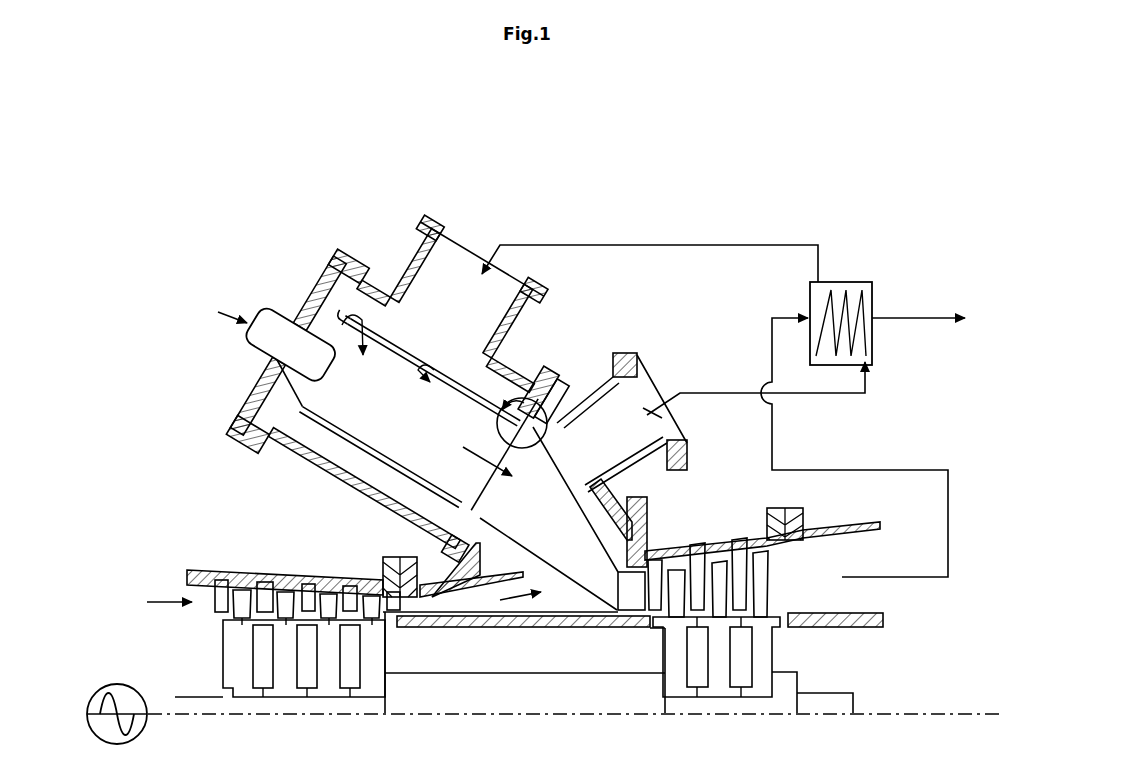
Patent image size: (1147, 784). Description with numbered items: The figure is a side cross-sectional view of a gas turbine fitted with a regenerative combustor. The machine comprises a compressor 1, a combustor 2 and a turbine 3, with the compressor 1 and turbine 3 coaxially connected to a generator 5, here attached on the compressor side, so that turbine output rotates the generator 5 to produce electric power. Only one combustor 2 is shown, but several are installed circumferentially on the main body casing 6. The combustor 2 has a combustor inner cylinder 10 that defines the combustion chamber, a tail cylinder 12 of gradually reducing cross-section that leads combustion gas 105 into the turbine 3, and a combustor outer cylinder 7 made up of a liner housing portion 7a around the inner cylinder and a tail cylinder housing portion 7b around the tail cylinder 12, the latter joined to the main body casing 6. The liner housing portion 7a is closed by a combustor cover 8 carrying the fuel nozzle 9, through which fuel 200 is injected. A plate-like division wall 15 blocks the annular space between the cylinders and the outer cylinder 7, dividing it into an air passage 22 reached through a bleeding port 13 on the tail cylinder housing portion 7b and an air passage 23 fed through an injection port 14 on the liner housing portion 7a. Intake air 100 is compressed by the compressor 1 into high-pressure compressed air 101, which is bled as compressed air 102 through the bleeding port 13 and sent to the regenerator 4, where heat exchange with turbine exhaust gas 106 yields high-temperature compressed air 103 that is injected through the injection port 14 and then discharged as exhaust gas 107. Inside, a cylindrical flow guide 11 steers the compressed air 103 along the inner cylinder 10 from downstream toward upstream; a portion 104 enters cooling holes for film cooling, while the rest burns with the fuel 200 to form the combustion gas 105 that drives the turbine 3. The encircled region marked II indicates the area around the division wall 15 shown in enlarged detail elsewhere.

The compressor 1 is at (253, 566).
The combustor 2 is at (417, 374).
The turbine 3 is at (696, 540).
The regenerator 4 is at (858, 282).
The generator 5 is at (106, 688).
The main body casing 6 is at (341, 579).
The combustor outer cylinder 7 is at (544, 395).
The liner housing portion 7a is at (538, 392).
The tail cylinder housing portion 7b is at (552, 401).
The combustor cover 8 is at (302, 255).
The fuel nozzle 9 is at (291, 345).
The combustor inner cylinder 10 is at (390, 403).
The flow guide 11 is at (309, 350).
The tail cylinder 12 is at (547, 518).
The bleeding port 13 is at (639, 372).
The injection port 14 is at (463, 290).
The division wall 15 is at (477, 528).
The air passage 22 is at (565, 608).
The air passage 23 is at (366, 495).
The air 100 is at (149, 602).
The compressed air 101 is at (503, 602).
The compressed air 102 is at (754, 390).
The compressed air 103 is at (650, 253).
The portion of high-temperature compressed air 104 is at (493, 401).
The combustion gas 105 is at (478, 451).
The exhaust gas 106 is at (854, 452).
The exhaust gas 107 is at (918, 307).
The fuel 200 is at (215, 312).
The section II detail II is at (541, 433).